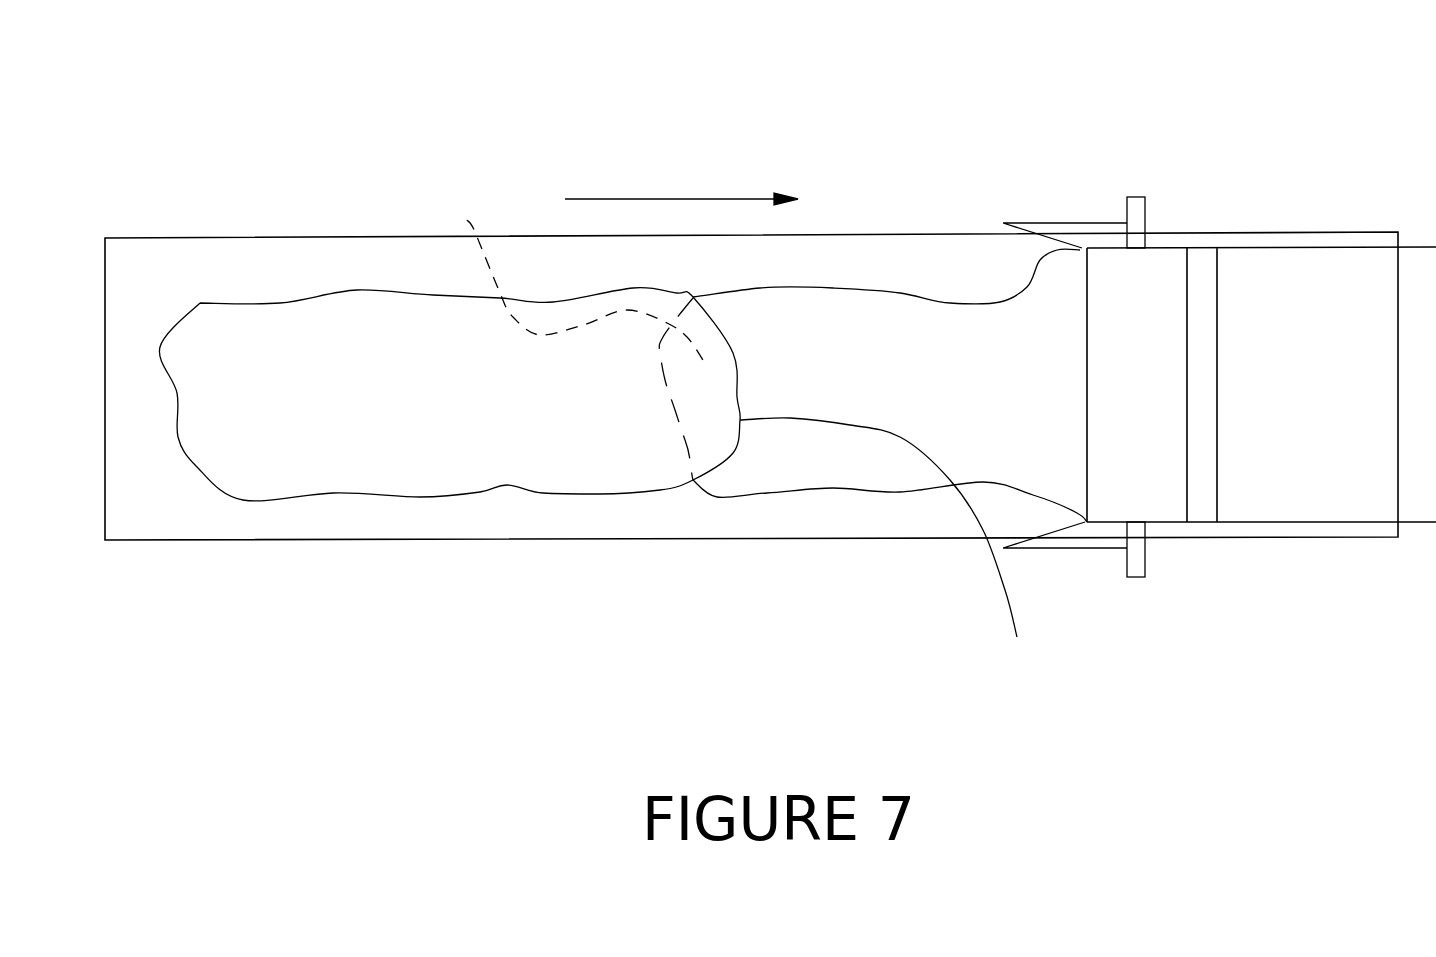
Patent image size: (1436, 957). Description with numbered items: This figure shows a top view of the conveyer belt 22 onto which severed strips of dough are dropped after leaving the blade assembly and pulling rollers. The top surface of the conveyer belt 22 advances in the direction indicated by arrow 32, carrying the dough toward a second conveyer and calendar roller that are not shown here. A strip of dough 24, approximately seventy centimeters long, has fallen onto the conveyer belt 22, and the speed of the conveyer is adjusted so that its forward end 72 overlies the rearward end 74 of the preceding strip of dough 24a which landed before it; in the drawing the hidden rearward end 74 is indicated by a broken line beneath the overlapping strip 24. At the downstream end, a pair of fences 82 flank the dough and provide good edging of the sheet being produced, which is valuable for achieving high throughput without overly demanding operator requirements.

The conveyer belt 22 is at (665, 515).
The strip of dough 24 is at (488, 447).
The preceding strip of dough 24a is at (932, 332).
The arrow 32 is at (660, 197).
The forward end 72 is at (884, 559).
The rearward end 74 is at (577, 271).
The fences 82 is at (1060, 248).